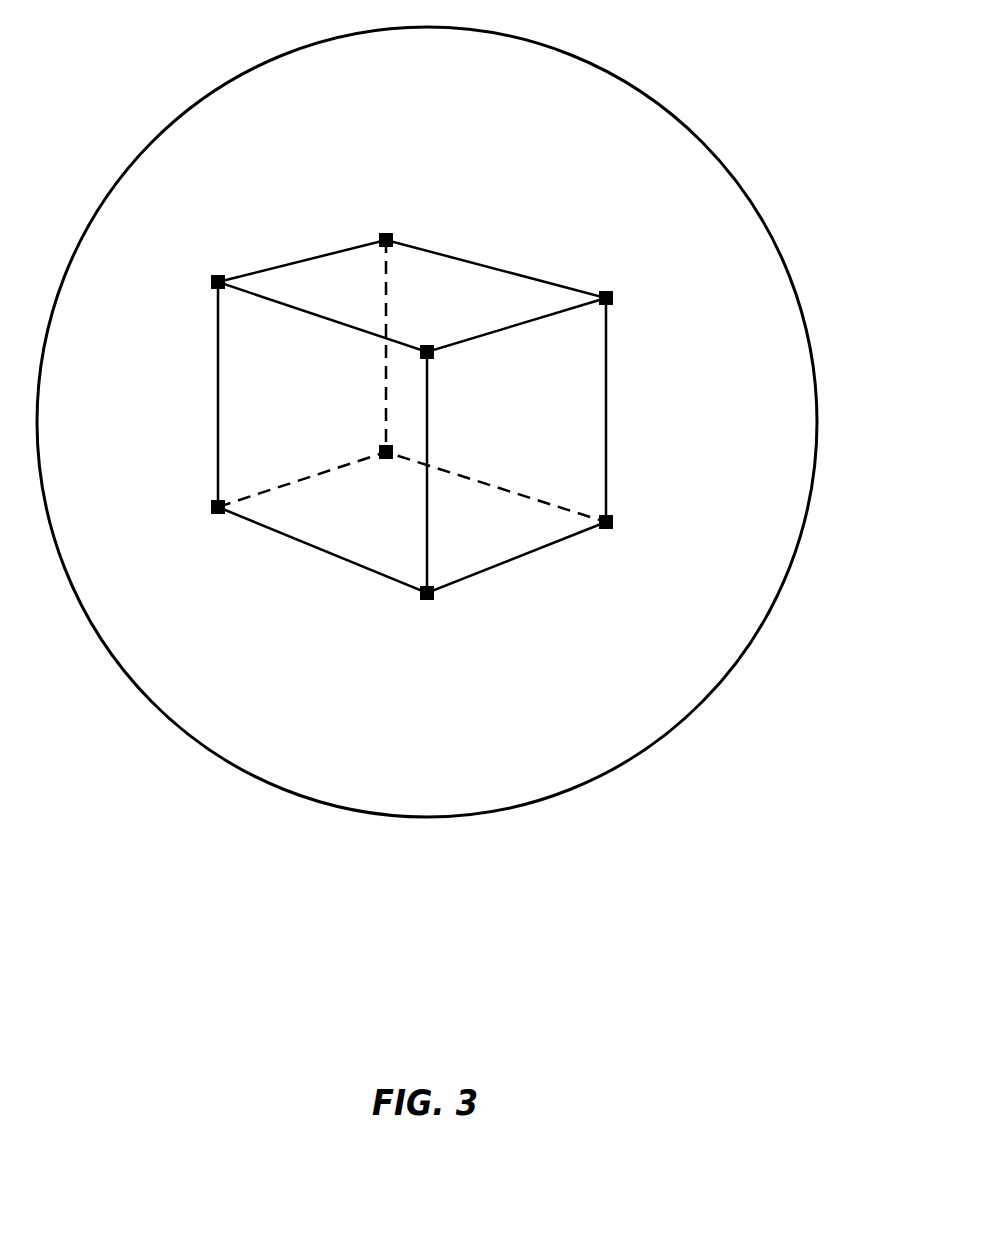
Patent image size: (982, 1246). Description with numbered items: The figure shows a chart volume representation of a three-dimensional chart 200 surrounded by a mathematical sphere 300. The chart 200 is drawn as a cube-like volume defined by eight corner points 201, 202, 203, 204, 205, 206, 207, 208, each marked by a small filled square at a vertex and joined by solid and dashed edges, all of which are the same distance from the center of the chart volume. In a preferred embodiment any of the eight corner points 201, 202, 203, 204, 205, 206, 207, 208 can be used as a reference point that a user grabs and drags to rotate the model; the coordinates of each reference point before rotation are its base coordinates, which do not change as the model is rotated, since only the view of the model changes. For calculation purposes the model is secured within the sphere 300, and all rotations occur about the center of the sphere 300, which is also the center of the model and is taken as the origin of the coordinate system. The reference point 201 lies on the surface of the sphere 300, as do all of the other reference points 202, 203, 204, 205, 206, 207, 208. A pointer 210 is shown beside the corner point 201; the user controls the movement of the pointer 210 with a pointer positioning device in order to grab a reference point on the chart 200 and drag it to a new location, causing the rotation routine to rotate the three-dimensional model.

The mathematical sphere 300 is at (190, 101).
The three-dimensional chart 200 is at (617, 352).
The corner point 201 is at (216, 514).
The corner point 202 is at (427, 600).
The corner point 203 is at (613, 519).
The corner point 204 is at (378, 450).
The corner point 205 is at (213, 280).
The corner point 206 is at (433, 355).
The corner point 207 is at (613, 296).
The corner point 208 is at (393, 239).
The pointer 210 is at (220, 518).